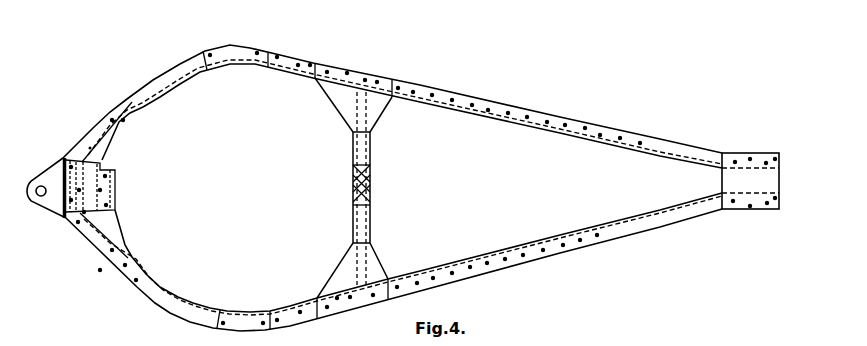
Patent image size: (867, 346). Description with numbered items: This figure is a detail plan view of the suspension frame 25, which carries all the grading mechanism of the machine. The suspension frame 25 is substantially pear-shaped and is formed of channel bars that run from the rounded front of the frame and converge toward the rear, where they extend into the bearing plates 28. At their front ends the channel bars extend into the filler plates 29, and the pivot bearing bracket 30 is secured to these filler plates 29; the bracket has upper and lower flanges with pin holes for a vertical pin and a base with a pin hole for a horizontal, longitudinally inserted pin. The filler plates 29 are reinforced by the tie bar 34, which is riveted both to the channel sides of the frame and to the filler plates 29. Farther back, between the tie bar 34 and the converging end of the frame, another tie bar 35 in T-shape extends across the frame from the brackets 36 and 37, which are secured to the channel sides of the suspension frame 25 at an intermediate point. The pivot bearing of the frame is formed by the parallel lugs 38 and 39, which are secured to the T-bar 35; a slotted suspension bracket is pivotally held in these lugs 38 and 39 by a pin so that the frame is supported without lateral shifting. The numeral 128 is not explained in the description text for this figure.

The suspension frame 25 is at (523, 107).
The bearing plates 28 is at (742, 152).
The filler plates 29 is at (66, 157).
The pivot bearing bracket 30 is at (38, 169).
The tie bar 34 is at (118, 160).
The T-shaped tie bar 35 is at (370, 238).
The bracket 36 is at (330, 103).
The bracket 37 is at (380, 273).
The parallel lug 38 is at (353, 190).
The parallel lug 39 is at (369, 188).
The rivet 128 is at (603, 133).